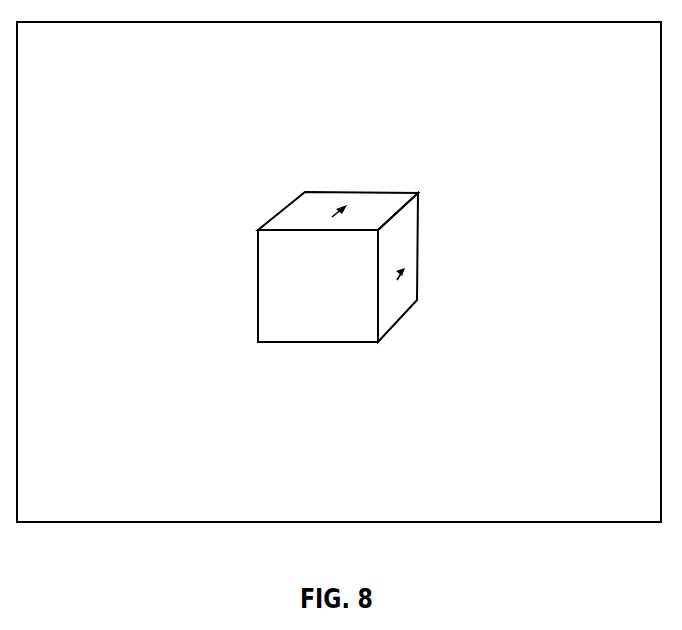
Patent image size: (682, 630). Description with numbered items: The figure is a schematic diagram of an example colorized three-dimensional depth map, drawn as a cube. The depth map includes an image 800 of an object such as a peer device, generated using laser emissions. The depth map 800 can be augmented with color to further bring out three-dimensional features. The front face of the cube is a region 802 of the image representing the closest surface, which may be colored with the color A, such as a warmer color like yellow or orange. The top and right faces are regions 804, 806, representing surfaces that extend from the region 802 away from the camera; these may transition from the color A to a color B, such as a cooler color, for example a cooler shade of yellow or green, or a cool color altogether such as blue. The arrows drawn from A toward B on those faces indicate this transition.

The image 800 is at (351, 271).
The region 802 is at (333, 333).
The region 804 is at (400, 313).
The region 806 is at (300, 213).